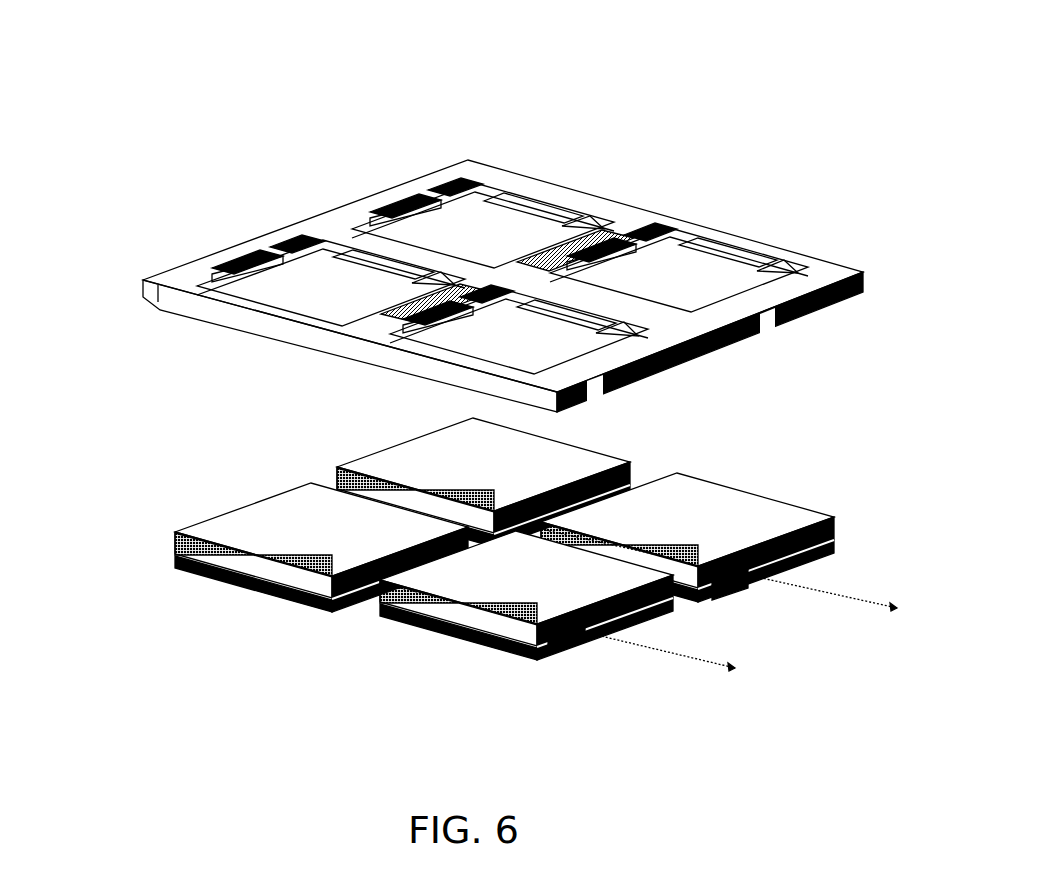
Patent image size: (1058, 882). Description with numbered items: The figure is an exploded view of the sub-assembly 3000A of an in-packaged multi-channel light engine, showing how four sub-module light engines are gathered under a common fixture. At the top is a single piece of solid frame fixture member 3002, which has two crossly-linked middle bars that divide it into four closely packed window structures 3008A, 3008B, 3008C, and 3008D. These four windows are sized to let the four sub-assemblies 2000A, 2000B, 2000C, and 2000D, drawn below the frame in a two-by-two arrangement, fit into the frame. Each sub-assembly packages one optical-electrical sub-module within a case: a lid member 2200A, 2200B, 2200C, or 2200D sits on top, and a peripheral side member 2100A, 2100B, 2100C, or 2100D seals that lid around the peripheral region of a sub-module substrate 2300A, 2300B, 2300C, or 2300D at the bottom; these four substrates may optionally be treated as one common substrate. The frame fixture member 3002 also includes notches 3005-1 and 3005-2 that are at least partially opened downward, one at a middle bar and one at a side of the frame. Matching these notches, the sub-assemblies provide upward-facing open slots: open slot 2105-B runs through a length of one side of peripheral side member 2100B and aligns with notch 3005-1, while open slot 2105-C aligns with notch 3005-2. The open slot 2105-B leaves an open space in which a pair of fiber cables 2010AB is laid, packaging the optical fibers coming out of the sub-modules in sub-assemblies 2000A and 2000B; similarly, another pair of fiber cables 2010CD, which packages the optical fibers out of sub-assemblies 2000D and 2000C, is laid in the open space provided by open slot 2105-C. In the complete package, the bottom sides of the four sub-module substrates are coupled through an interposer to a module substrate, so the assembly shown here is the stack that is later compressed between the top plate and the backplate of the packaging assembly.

The sub-assembly 3000A is at (503, 57).
The frame fixture member 3002 is at (482, 282).
The window structure 3008A is at (460, 185).
The window structure 3008B is at (775, 250).
The window structure 3008C is at (630, 350).
The window structure 3008D is at (228, 263).
The notch 3005-1 is at (770, 327).
The notch 3005-2 is at (600, 395).
The sub-assembly 2000A is at (524, 552).
The sub-assembly 2000B is at (752, 575).
The sub-assembly 2000C is at (570, 632).
The sub-assembly 2000D is at (284, 561).
The lid member 2200A is at (483, 464).
The lid member 2200B is at (687, 519).
The lid member 2200C is at (526, 577).
The lid member 2200D is at (321, 529).
The peripheral side member 2100A is at (645, 497).
The peripheral side member 2100B is at (831, 558).
The peripheral side member 2100C is at (564, 643).
The peripheral side member 2100D is at (352, 593).
The sub-module substrate 2300A is at (385, 596).
The sub-module substrate 2300B is at (744, 574).
The sub-module substrate 2300C is at (456, 645).
The sub-module substrate 2300D is at (216, 589).
The open slot 2105-B is at (792, 624).
The open slot 2105-C is at (622, 677).
The pair of fiber cables 2010AB is at (838, 598).
The pair of fiber cables 2010CD is at (712, 668).